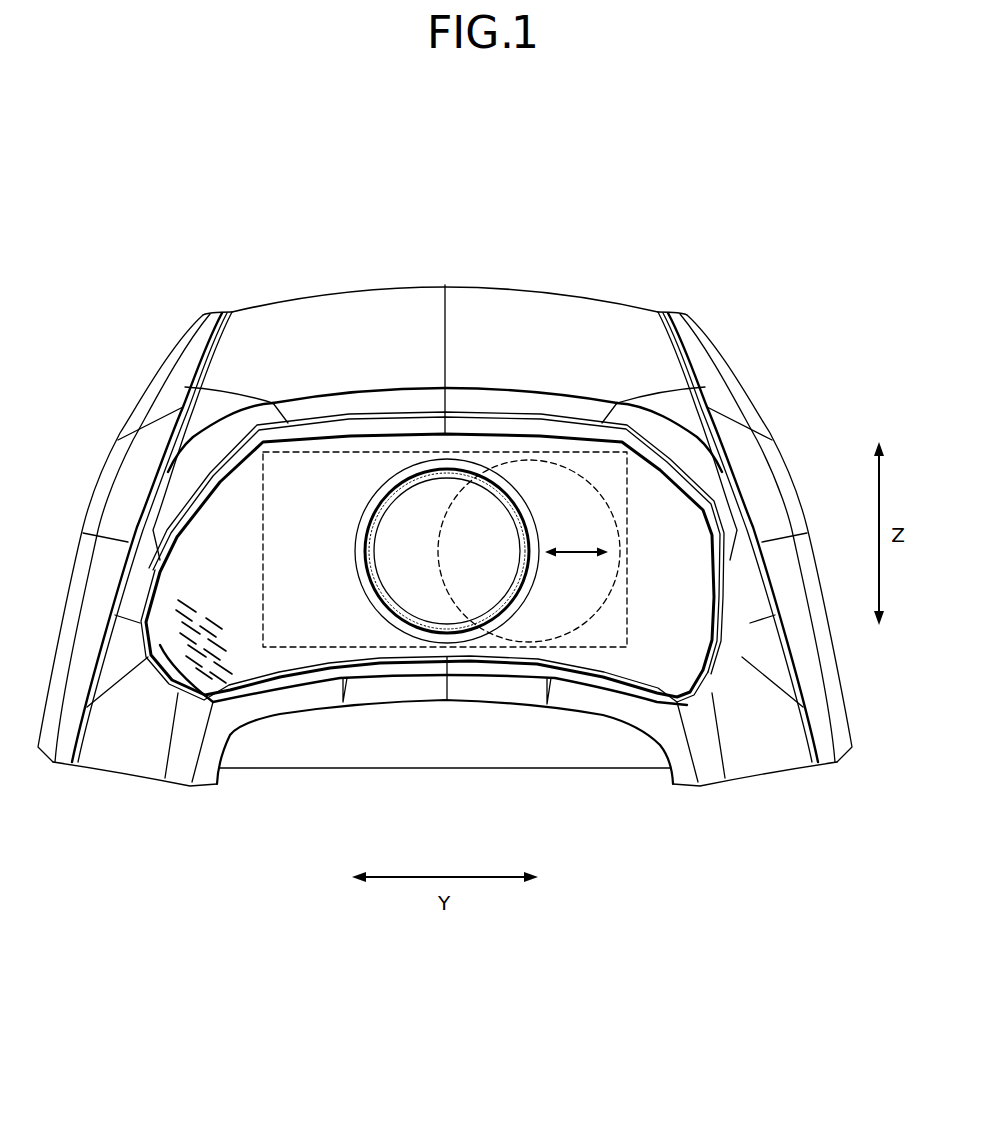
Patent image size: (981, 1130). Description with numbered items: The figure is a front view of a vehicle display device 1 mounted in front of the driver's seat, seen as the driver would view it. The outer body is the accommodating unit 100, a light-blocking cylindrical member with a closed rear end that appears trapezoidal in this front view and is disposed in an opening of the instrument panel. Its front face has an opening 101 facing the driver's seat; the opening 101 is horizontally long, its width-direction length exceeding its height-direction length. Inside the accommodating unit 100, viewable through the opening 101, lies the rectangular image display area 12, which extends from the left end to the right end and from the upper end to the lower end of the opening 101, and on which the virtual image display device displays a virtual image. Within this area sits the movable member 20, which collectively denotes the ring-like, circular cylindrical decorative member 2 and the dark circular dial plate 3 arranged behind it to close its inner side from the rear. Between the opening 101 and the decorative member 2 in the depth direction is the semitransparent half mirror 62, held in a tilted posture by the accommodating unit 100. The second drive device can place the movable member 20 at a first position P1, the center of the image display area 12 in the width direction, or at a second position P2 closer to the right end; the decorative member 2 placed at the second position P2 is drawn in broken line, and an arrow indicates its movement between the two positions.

The vehicle display device 1 is at (341, 191).
The accommodating unit 100 is at (244, 299).
The opening 101 is at (312, 450).
The image display area 12 is at (520, 452).
The movable member 20 is at (422, 228).
The decorative member 2 is at (404, 458).
The dial plate 3 is at (400, 512).
The half mirror 62 is at (258, 667).
The first position P1 is at (388, 642).
The second position P2 is at (588, 644).